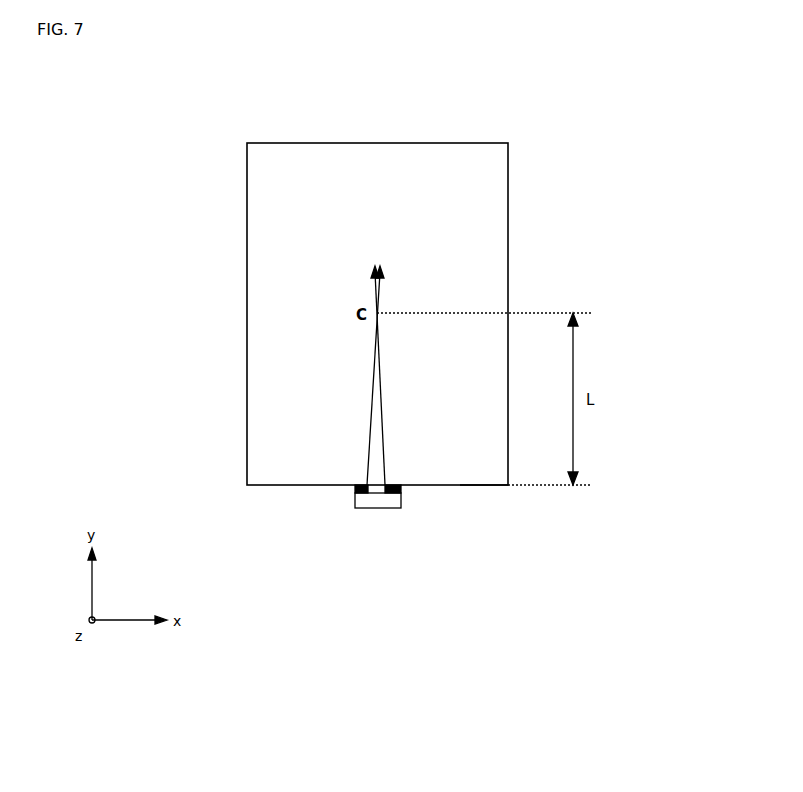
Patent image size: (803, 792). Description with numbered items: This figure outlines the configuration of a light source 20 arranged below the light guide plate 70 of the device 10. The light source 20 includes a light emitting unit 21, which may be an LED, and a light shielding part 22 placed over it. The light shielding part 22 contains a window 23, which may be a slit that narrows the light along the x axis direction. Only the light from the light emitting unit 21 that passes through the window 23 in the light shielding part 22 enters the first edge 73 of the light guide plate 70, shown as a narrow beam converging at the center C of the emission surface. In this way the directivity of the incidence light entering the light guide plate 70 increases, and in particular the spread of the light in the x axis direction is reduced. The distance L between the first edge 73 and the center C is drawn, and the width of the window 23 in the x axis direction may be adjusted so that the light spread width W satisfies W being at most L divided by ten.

The display device 10 is at (569, 97).
The light guide plate 70 is at (508, 172).
The first edge 73 is at (498, 489).
The light source 20 is at (402, 515).
The light emitting unit 21 is at (354, 503).
The light shielding part 22 is at (400, 490).
The window 23 is at (379, 486).